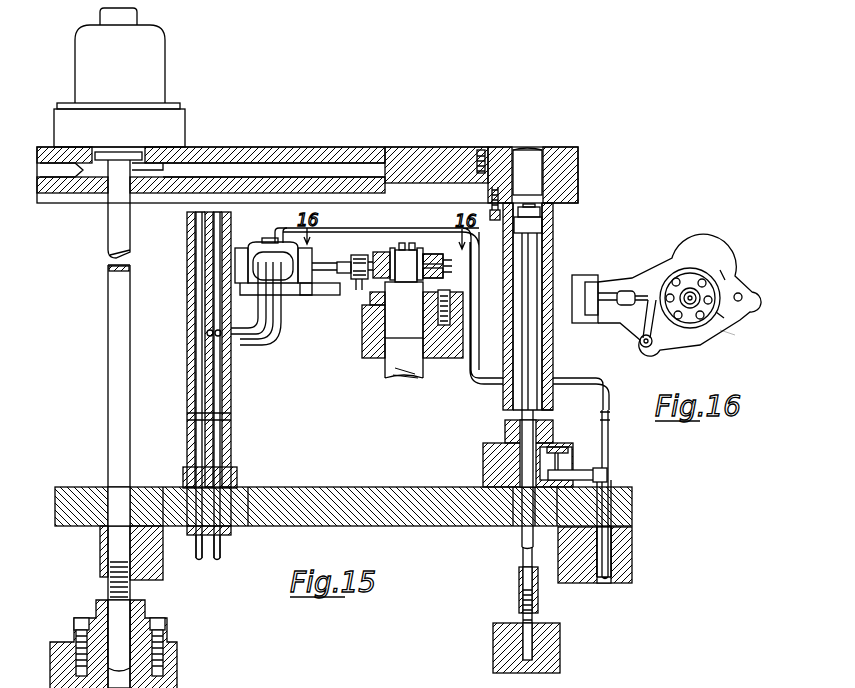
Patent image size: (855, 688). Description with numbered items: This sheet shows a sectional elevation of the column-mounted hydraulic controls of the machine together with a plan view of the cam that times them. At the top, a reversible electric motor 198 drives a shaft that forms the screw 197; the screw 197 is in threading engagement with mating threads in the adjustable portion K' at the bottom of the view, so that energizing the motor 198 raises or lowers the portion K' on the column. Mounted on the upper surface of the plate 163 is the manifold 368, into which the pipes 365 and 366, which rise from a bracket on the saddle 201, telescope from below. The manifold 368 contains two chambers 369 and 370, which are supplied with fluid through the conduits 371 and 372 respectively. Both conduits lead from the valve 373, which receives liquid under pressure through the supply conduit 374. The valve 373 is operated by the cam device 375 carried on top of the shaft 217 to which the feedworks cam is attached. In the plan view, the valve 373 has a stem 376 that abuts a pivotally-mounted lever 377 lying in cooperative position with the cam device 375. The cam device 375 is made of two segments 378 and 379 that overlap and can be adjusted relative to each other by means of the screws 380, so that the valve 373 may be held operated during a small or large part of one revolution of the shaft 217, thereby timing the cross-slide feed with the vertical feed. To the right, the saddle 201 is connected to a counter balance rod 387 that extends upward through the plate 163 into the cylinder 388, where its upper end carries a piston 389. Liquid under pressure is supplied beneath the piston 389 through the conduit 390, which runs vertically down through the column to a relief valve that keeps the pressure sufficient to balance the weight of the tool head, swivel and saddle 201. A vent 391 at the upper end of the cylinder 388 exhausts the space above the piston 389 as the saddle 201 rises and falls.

In FIG. 15, the reversible electric motor 198 is at (160, 85).
In FIG. 15, the screw 197 is at (108, 590).
In FIG. 15, the plate 163 is at (460, 515).
In FIG. 15, the saddle 201 is at (548, 665).
In FIG. 15, the shaft 217 is at (393, 361).
In FIG. 15, the pipe 365 is at (197, 558).
In FIG. 15, the pipe 366 is at (220, 558).
In FIG. 15, the manifold 368 is at (233, 440).
In FIG. 15, the chamber 369 is at (197, 283).
In FIG. 15, the chamber 370 is at (215, 300).
In FIG. 15, the conduit 371 is at (290, 320).
In FIG. 15, the conduit 372 is at (242, 338).
In FIG. 15, the valve 373 is at (252, 245).
In FIG. 16, the valve 373 is at (598, 320).
In FIG. 15, the supply conduit 374 is at (377, 228).
In FIG. 15, the cam device 375 is at (405, 241).
In FIG. 16, the cam device 375 is at (725, 329).
In FIG. 15, the stem 376 is at (332, 273).
In FIG. 16, the stem 376 is at (625, 305).
In FIG. 15, the lever 377 is at (367, 255).
In FIG. 16, the lever 377 is at (650, 325).
In FIG. 15, the cam segment 378 is at (445, 258).
In FIG. 16, the cam segment 378 is at (712, 268).
In FIG. 15, the cam segment 379 is at (445, 270).
In FIG. 16, the cam segment 379 is at (728, 287).
In FIG. 16, the screw 380 is at (679, 278).
In FIG. 15, the counter balance rod 387 is at (522, 560).
In FIG. 15, the cylinder 388 is at (508, 426).
In FIG. 15, the piston 389 is at (540, 230).
In FIG. 15, the conduit 390 is at (598, 575).
In FIG. 15, the vent 391 is at (548, 210).
In FIG. 15, the adjustable portion K' is at (135, 644).